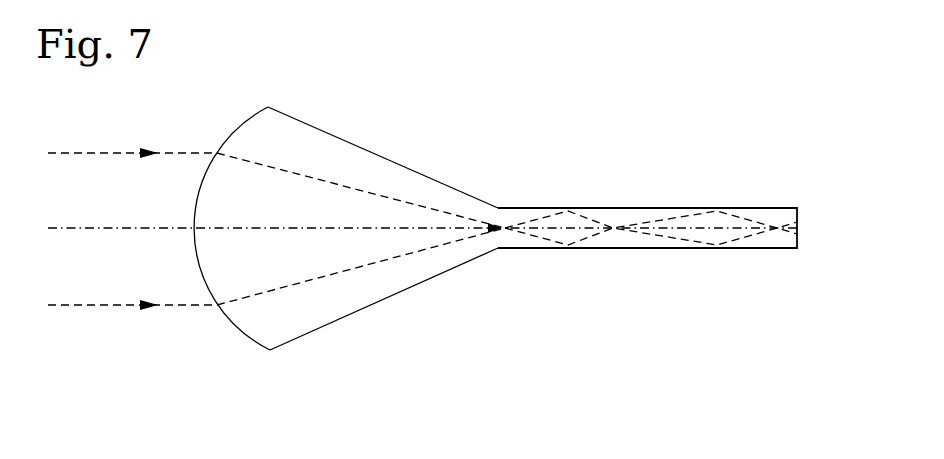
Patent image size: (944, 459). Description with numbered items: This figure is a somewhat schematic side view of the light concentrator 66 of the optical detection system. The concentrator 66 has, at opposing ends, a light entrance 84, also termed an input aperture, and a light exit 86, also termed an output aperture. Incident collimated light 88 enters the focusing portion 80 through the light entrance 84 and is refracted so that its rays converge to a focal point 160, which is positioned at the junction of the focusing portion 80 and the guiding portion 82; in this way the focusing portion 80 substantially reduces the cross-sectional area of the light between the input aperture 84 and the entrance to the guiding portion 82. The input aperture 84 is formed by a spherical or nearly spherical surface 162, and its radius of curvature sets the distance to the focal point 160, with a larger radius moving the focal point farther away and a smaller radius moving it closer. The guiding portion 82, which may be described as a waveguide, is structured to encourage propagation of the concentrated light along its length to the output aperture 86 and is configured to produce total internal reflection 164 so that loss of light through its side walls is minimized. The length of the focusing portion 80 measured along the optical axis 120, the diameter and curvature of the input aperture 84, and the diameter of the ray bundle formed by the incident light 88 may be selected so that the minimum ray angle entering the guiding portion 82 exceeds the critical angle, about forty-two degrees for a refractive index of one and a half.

The concentrator 66 is at (433, 92).
The focusing portion 80 is at (340, 132).
The guiding portion 82 is at (642, 207).
The light entrance 84 is at (223, 318).
The light exit 86 is at (798, 238).
The incident light 88 is at (115, 148).
The optical axis 120 is at (155, 227).
The focal point 160 is at (500, 237).
The spherical surface 162 is at (242, 341).
The total internal reflection 164 is at (634, 268).